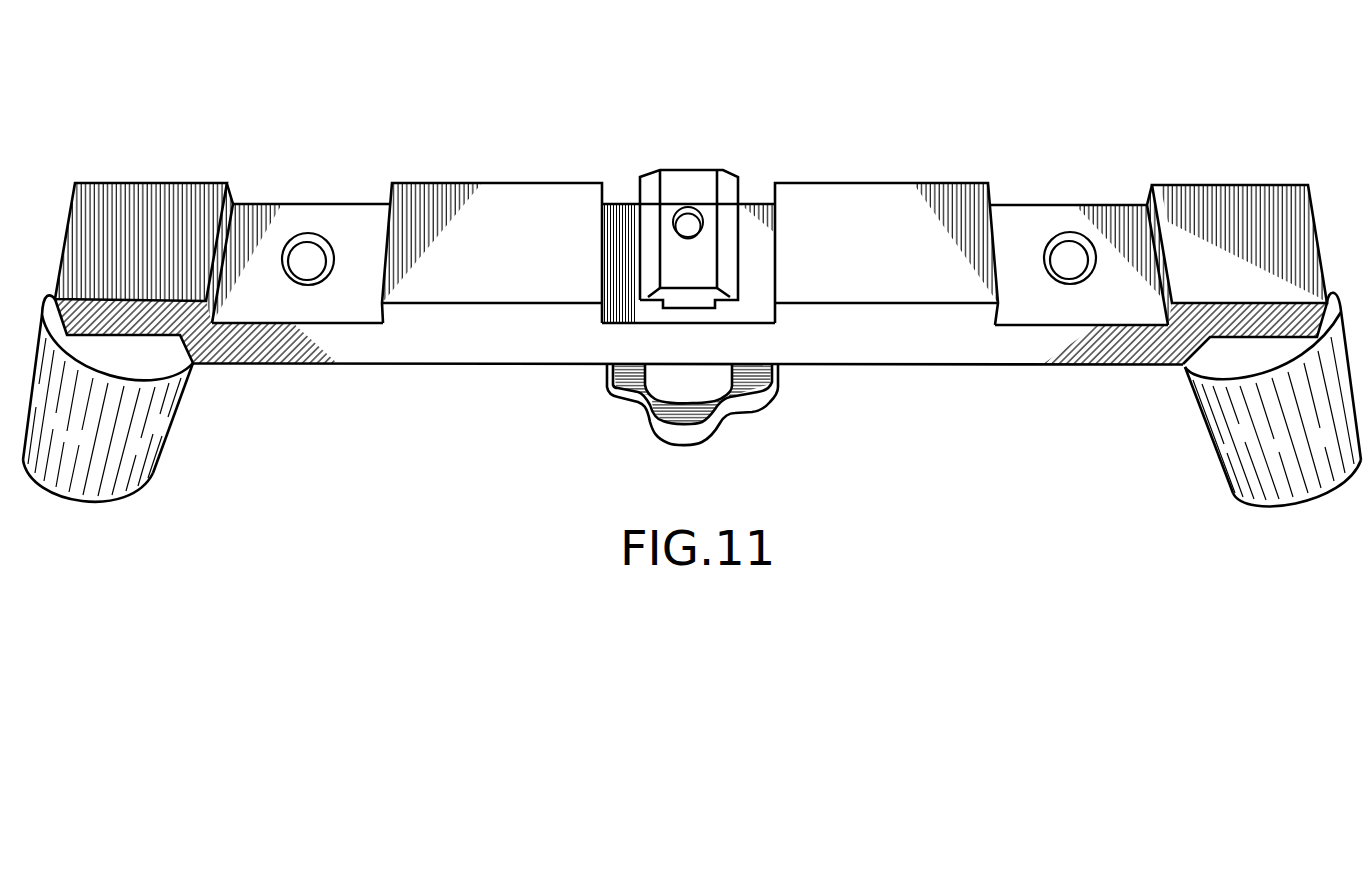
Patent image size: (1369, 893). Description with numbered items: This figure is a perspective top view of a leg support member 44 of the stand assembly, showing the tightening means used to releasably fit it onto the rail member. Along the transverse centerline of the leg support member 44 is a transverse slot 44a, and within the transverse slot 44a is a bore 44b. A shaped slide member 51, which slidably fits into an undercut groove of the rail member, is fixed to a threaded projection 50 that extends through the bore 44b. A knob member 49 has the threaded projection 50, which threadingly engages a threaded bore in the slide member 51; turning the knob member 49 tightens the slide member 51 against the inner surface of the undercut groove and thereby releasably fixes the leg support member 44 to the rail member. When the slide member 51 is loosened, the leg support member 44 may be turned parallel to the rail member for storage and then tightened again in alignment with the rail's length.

The leg support member 44 is at (1035, 355).
The transverse slot 44a is at (605, 227).
The bore 44b is at (1070, 258).
The knob member 49 is at (762, 408).
The threaded projection 50 is at (688, 222).
The slide member 51 is at (780, 227).